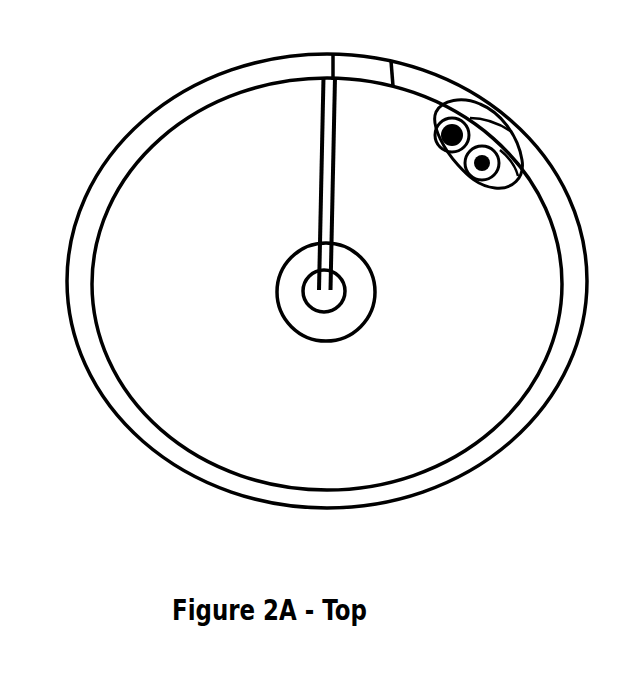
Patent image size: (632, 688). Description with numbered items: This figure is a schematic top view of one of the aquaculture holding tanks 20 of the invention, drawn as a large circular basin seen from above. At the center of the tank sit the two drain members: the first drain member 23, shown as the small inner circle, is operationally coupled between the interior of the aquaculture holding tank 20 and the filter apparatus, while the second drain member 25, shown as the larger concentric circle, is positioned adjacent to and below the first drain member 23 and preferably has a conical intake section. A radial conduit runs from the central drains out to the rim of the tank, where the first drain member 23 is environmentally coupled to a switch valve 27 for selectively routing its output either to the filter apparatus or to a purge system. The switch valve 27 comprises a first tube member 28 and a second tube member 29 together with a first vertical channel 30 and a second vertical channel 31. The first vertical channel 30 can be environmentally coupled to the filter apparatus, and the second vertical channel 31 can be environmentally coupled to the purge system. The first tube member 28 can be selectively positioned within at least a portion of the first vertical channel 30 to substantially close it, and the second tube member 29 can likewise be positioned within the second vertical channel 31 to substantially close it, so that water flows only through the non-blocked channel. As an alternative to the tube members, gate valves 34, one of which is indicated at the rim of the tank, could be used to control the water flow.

The aquaculture holding tank 20 is at (442, 72).
The gate valve 34 is at (365, 56).
The first drain member 23 is at (341, 268).
The second drain member 25 is at (375, 305).
The switch valve 27 is at (522, 124).
The first tube member 28 is at (466, 122).
The second tube member 29 is at (540, 176).
The first vertical channel 30 is at (513, 120).
The second vertical channel 31 is at (532, 153).